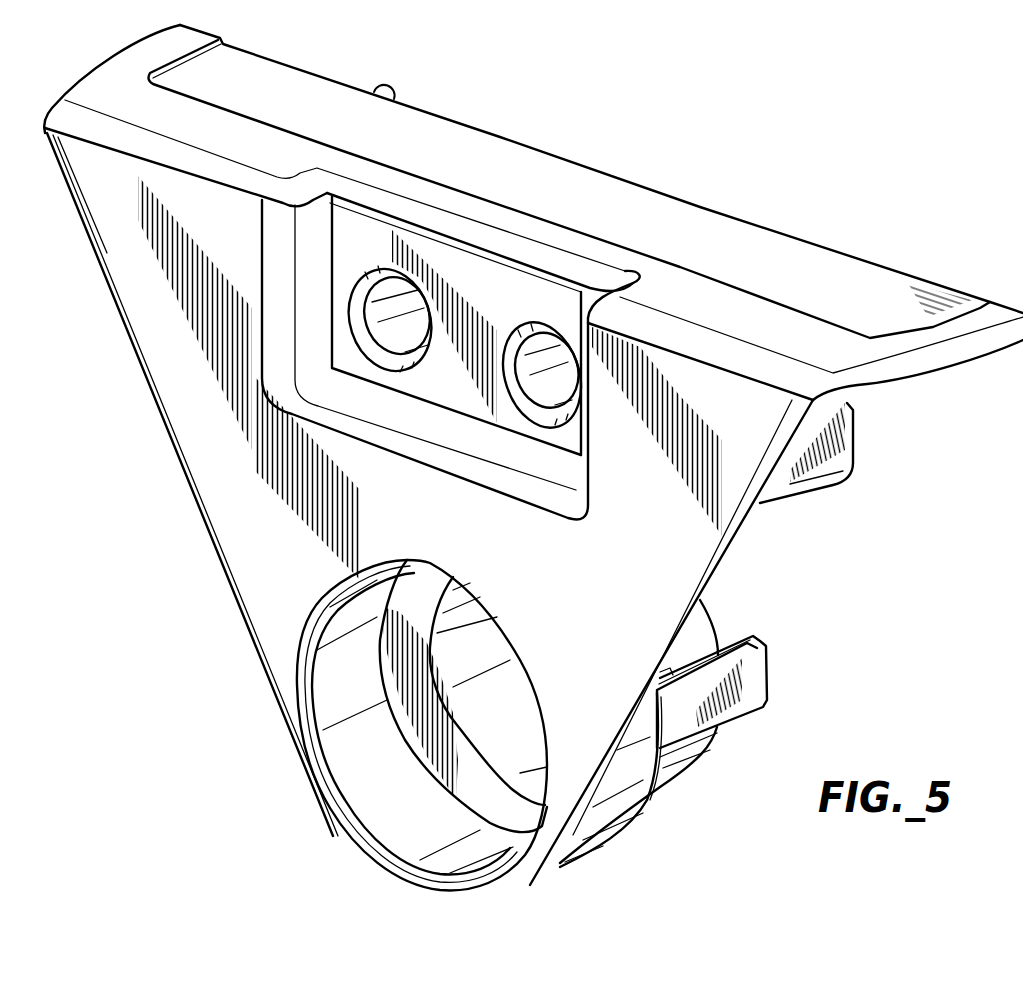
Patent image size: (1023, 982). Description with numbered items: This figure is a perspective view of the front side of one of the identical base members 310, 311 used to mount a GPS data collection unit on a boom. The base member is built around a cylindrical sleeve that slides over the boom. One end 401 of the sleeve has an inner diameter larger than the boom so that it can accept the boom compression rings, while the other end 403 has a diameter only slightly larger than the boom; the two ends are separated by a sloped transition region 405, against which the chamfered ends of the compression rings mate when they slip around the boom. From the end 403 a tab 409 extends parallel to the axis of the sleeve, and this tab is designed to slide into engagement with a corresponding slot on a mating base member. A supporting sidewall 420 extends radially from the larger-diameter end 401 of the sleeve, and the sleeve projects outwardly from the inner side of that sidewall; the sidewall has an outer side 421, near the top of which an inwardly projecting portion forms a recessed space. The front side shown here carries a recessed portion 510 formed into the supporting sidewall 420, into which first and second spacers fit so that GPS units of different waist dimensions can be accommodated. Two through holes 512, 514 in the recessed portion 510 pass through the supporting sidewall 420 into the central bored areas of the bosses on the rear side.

The base member 310 is at (785, 125).
The base member 311 is at (112, 79).
The end of sleeve 401 is at (632, 802).
The end of sleeve 403 is at (690, 763).
The sloped transition region 405 is at (437, 753).
The tab 409 is at (762, 682).
The supporting sidewall 420 is at (737, 530).
The outer side 421 is at (175, 396).
The recessed portion 510 is at (476, 292).
The through hole 512 is at (407, 320).
The through hole 514 is at (557, 372).